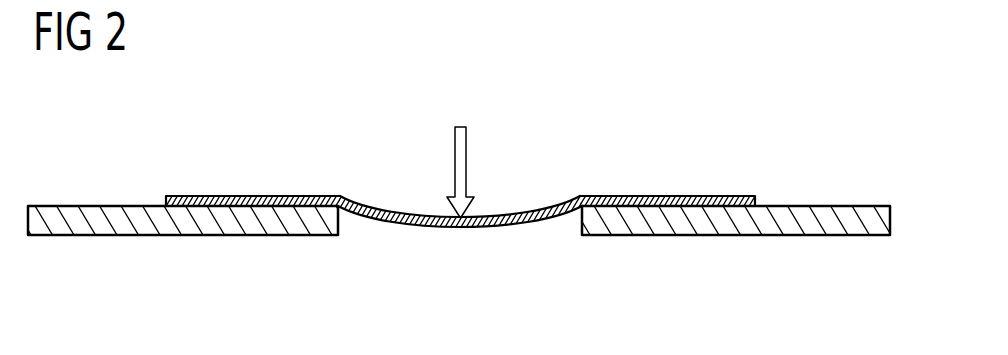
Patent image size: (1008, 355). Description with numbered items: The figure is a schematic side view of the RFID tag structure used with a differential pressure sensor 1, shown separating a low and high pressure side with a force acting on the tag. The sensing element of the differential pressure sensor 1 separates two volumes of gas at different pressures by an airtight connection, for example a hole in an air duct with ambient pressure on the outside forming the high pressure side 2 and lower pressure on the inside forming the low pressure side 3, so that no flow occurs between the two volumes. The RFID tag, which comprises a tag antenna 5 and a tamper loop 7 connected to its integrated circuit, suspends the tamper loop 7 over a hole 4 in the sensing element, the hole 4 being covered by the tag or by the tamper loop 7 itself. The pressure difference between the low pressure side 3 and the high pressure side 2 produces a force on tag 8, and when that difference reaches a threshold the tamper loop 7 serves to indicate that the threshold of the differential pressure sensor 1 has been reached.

The differential pressure sensor 1 is at (463, 184).
The high pressure side 2 is at (225, 182).
The low pressure side 3 is at (223, 243).
The hole 4 is at (548, 233).
The tag antenna 5 is at (805, 225).
The tamper loop 7 is at (677, 198).
The force on tag 8 is at (458, 162).